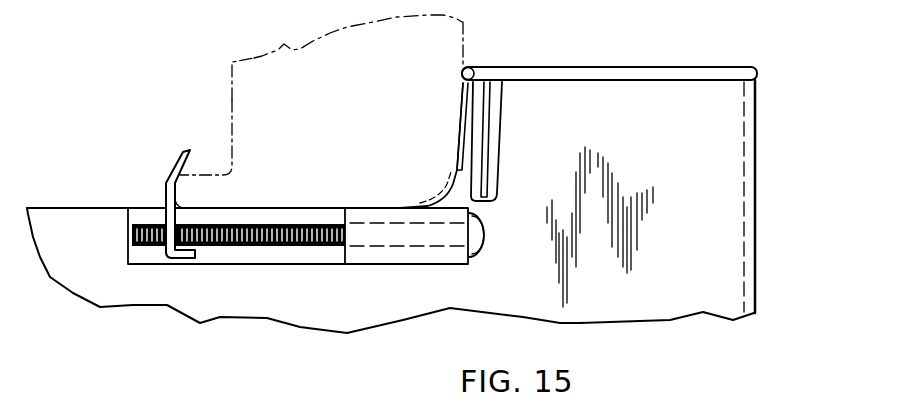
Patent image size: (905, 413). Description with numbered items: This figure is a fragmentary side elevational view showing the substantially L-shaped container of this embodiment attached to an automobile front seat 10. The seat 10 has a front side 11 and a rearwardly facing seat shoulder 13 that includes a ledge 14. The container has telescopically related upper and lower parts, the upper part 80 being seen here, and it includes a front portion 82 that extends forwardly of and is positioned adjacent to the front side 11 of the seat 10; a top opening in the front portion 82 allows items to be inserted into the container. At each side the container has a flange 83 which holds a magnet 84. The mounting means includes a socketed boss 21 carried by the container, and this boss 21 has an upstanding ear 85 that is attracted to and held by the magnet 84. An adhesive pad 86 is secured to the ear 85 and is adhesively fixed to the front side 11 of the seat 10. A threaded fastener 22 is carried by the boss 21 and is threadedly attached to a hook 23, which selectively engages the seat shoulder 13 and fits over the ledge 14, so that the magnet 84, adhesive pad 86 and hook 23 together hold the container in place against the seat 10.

The automobile front seat 10 is at (286, 45).
The front side 11 is at (466, 39).
The seat shoulder 13 is at (231, 72).
The ledge 14 is at (203, 174).
The socketed boss 21 is at (377, 264).
The threaded fastener 22 is at (236, 250).
The hook 23 is at (184, 157).
The upper part 80 is at (52, 208).
The front portion 82 is at (757, 172).
The flange 83 is at (498, 116).
The magnet 84 is at (482, 161).
The upstanding ear 85 is at (466, 106).
The adhesive pad 86 is at (458, 142).